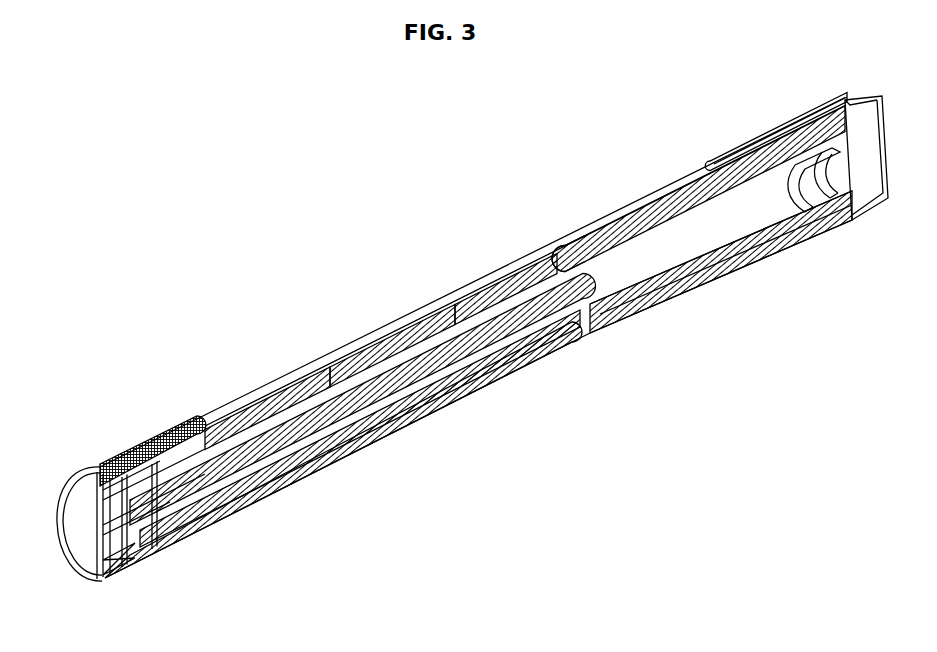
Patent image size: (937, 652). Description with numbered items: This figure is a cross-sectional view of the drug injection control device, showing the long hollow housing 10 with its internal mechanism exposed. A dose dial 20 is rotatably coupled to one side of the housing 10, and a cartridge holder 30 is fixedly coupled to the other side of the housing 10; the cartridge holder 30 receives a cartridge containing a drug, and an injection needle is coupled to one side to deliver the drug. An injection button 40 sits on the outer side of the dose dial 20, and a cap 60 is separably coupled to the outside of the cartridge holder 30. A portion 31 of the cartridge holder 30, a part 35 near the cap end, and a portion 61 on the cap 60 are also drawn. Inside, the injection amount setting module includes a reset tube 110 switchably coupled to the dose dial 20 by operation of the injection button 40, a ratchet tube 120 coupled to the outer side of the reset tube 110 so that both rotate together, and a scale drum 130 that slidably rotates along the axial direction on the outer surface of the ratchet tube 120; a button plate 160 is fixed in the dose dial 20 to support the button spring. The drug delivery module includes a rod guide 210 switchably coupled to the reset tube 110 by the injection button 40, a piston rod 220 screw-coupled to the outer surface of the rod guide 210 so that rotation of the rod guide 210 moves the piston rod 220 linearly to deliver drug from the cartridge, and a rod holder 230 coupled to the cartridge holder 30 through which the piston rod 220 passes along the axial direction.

The housing 10 is at (378, 326).
The dose dial 20 is at (124, 440).
The cartridge holder 30 is at (690, 190).
The rail end portion 31 is at (570, 246).
The clip 35 is at (812, 214).
The injection button 40 is at (75, 521).
The cap 60 is at (640, 202).
The guide bar 61 is at (767, 140).
The reset tube 110 is at (250, 397).
The ratchet tube 120 is at (340, 366).
The scale drum 130 is at (208, 420).
The button plate 160 is at (112, 573).
The rod guide 210 is at (240, 522).
The piston rod 220 is at (331, 475).
The rod holder 230 is at (468, 297).